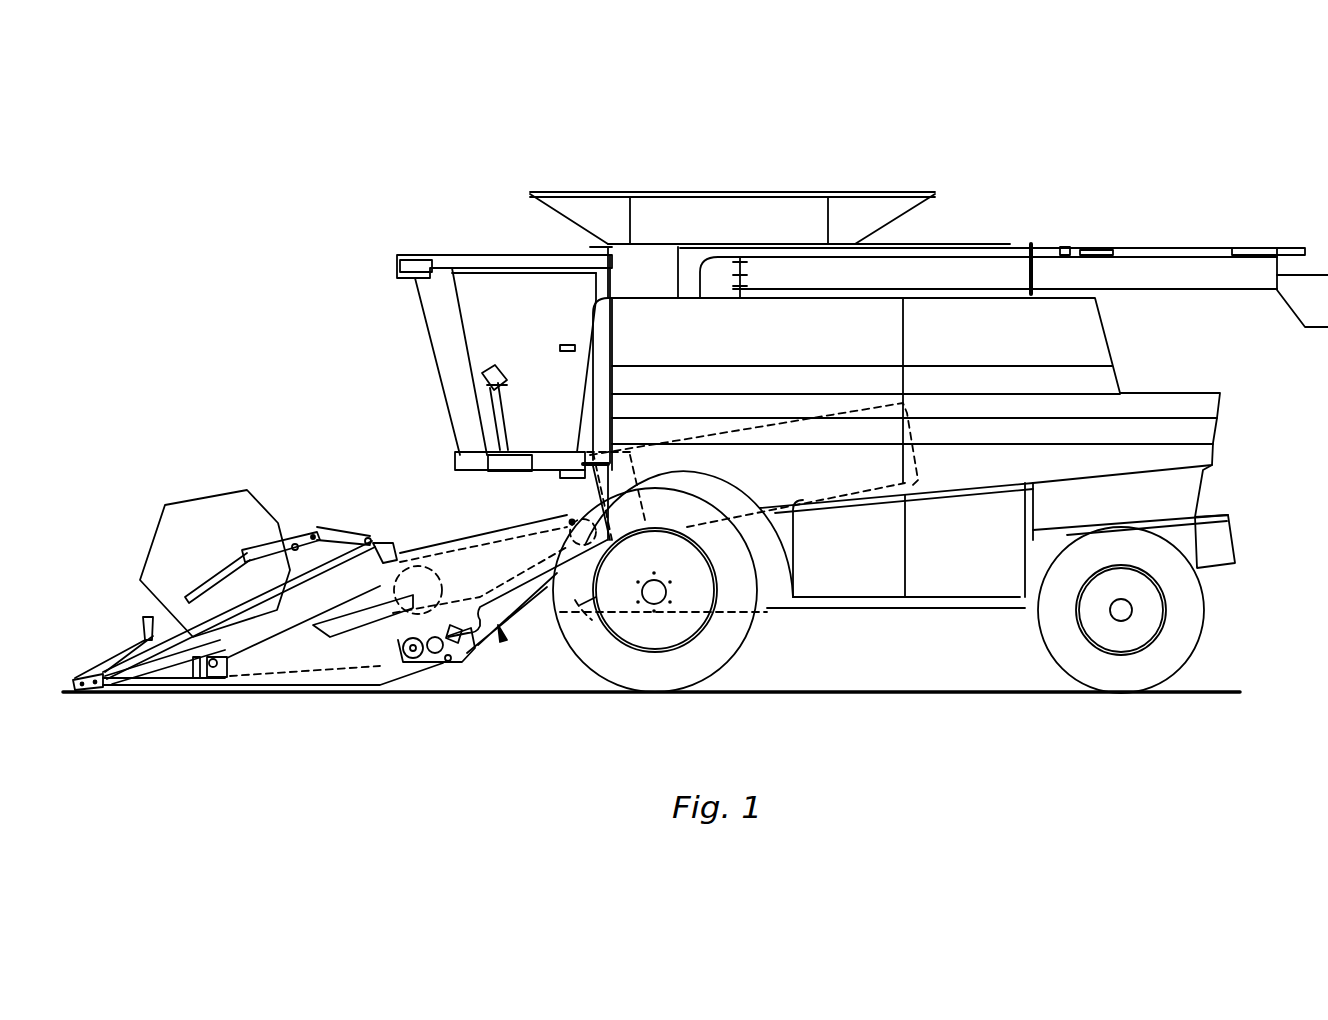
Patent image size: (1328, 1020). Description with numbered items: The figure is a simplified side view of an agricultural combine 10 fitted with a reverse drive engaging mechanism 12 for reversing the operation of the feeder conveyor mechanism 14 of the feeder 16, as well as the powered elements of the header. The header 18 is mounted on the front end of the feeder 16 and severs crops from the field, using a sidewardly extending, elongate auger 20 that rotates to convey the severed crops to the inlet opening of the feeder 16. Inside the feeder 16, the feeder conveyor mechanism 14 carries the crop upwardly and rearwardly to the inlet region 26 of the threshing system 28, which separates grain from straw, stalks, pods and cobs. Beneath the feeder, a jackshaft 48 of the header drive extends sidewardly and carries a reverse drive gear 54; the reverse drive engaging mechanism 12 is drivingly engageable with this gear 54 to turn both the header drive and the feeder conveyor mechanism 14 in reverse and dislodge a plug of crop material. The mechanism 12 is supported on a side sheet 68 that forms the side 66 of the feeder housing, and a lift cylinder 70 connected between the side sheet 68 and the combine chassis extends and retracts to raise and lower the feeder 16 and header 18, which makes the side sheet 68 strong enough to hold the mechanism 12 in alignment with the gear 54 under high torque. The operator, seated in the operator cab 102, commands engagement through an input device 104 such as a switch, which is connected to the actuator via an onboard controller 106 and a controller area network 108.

The agricultural combine 10 is at (1202, 217).
The reverse drive engaging mechanism 12 is at (440, 660).
The feeder conveyor mechanism 14 is at (427, 560).
The feeder 16 is at (503, 640).
The header 18 is at (312, 684).
The auger 20 is at (318, 655).
The inlet region 26 is at (630, 517).
The threshing system 28 is at (855, 408).
The jackshaft 48 is at (380, 677).
The reverse drive gear 54 is at (417, 663).
The side 66 is at (487, 565).
The side sheet 68 is at (447, 662).
The lift cylinder 70 is at (535, 652).
The operator cab 102 is at (462, 255).
The input device 104 is at (495, 366).
The onboard controller 106 is at (465, 462).
The controller area network 108 is at (568, 466).